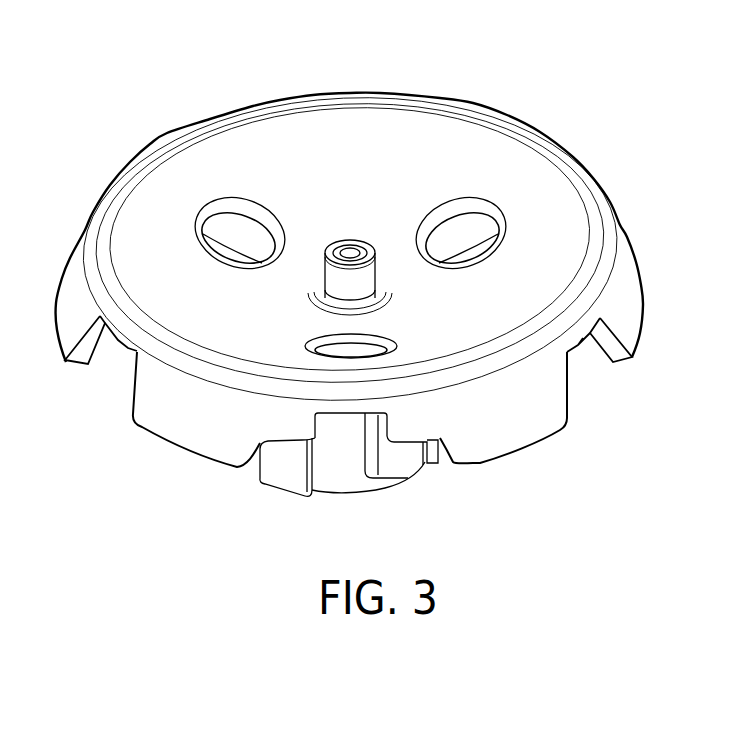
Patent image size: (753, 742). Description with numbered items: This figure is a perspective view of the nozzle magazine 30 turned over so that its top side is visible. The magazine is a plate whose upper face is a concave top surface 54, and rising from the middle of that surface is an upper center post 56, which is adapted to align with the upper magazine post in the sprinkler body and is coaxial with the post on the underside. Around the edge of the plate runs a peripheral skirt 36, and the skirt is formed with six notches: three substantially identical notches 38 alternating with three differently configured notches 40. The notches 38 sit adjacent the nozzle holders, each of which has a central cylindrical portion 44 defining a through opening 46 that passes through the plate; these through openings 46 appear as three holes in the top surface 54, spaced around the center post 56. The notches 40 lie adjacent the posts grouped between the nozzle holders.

The nozzle magazine 30 is at (356, 278).
The peripheral skirt 36 is at (497, 428).
The notches 38 is at (338, 412).
The notches 40 is at (120, 347).
The central cylindrical portion 44 is at (348, 482).
The through opening 46 is at (258, 222).
The concave top surface 54 is at (349, 122).
The upper center post 56 is at (328, 277).